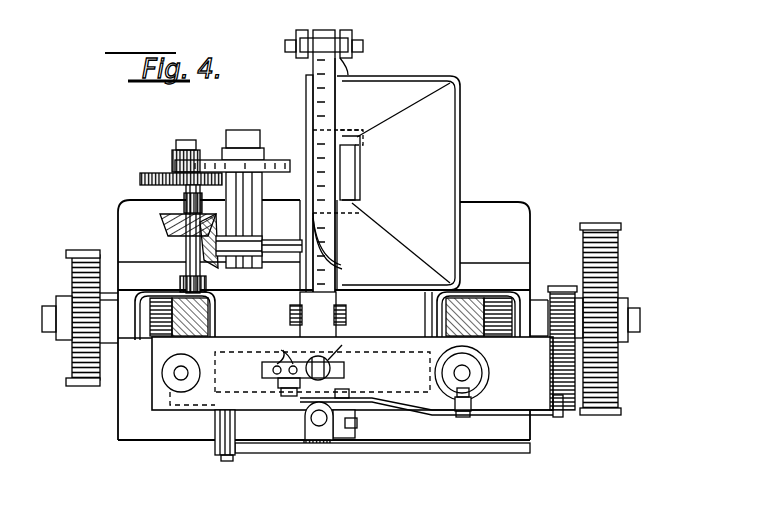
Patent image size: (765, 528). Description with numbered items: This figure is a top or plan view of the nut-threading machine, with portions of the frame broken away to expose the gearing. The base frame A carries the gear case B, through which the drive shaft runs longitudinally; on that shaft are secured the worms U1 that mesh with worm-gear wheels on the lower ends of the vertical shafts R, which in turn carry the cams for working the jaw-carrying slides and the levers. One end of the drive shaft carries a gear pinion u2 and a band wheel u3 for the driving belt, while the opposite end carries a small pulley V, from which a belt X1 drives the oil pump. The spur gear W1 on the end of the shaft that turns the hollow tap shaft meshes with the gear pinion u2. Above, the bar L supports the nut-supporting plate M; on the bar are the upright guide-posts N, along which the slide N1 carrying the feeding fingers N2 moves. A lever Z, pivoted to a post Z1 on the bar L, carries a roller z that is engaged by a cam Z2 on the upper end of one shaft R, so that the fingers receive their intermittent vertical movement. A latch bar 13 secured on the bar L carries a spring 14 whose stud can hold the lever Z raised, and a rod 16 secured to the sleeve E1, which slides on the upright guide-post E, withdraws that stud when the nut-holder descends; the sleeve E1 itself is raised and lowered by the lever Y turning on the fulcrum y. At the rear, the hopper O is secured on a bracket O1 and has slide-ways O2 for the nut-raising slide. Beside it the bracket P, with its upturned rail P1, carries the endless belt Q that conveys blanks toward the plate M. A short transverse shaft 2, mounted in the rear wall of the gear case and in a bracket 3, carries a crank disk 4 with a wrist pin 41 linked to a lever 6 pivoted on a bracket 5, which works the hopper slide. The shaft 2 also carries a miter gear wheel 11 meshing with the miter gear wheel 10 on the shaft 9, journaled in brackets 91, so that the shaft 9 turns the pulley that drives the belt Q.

The base frame A is at (324, 320).
The endless belt Q is at (326, 100).
The upturned rail or flange P1 is at (306, 82).
The bracket O1 is at (342, 48).
The hopper O is at (398, 183).
The slide-ways O2 is at (352, 174).
The bracket P is at (338, 252).
The bracket 5 is at (262, 192).
The lever 6 is at (203, 160).
The wrist pin 41 is at (178, 148).
The crank disk 4 is at (146, 173).
The short transverse shaft 2 is at (186, 240).
The bracket 3 is at (182, 200).
The miter gear wheel 11 is at (172, 220).
The miter gear wheel 10 is at (216, 258).
The brackets 91 is at (254, 256).
The shaft 9 is at (281, 254).
The worms U1 is at (215, 316).
The nut-supporting plate M is at (340, 335).
The small pulley V is at (70, 278).
The belt X1 is at (76, 354).
The bar L is at (352, 373).
The vertical shafts R is at (178, 374).
The cam Z2 is at (482, 362).
The roller z is at (472, 402).
The lever Z is at (486, 412).
The slide N1 is at (262, 366).
The upright guide-posts N is at (285, 351).
The feeding fingers N2 is at (330, 366).
The latch bar 13 is at (344, 404).
The spring 14 is at (355, 432).
The rod 16 is at (357, 420).
The upright guide-post E is at (322, 422).
The sleeve E1 is at (316, 448).
The lever Y is at (270, 453).
The fulcrum y is at (228, 461).
The gear case B is at (162, 440).
The gear pinion u2 is at (554, 290).
The spur gear W1 is at (585, 400).
The band wheel u3 is at (618, 274).
The post Z1 is at (556, 414).